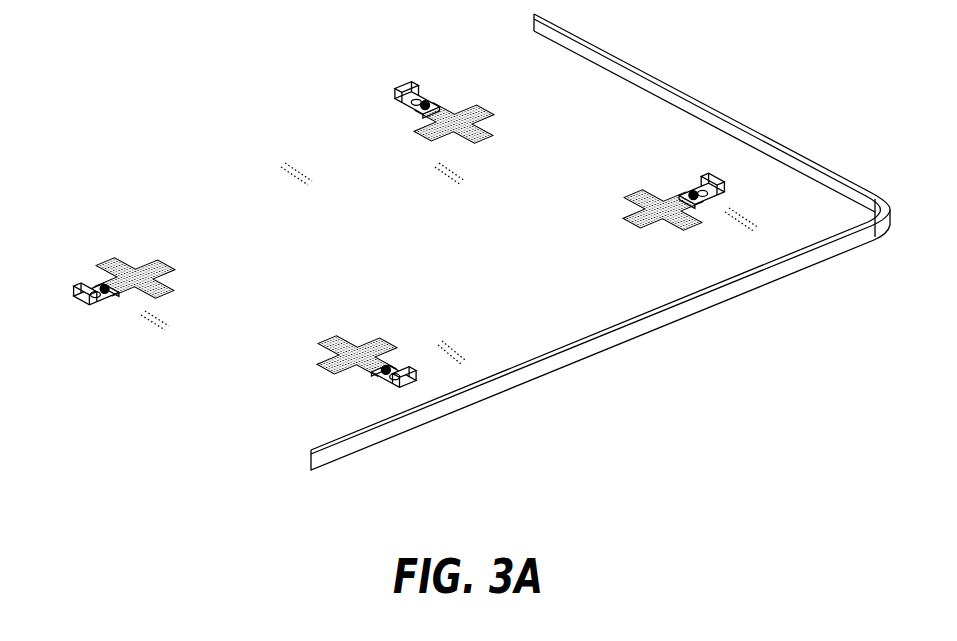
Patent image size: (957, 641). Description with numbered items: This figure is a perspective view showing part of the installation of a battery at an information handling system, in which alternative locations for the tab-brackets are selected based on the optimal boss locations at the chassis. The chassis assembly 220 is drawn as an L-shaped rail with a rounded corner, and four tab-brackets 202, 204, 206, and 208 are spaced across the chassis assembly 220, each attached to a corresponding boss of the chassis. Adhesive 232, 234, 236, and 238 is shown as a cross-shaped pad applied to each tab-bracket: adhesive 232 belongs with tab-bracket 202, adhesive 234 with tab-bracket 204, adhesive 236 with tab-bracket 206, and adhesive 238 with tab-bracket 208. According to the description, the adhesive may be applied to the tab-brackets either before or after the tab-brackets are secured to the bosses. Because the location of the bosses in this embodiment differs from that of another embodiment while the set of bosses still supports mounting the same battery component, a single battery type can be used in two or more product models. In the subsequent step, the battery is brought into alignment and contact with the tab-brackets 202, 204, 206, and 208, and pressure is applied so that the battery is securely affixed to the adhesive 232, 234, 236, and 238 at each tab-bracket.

The tab-bracket 202 is at (405, 80).
The tab-bracket 204 is at (720, 172).
The tab-bracket 206 is at (400, 363).
The tab-bracket 208 is at (93, 272).
The chassis assembly 220 is at (805, 197).
The adhesive 232 is at (487, 105).
The adhesive 234 is at (637, 188).
The adhesive 236 is at (337, 340).
The adhesive 238 is at (163, 260).